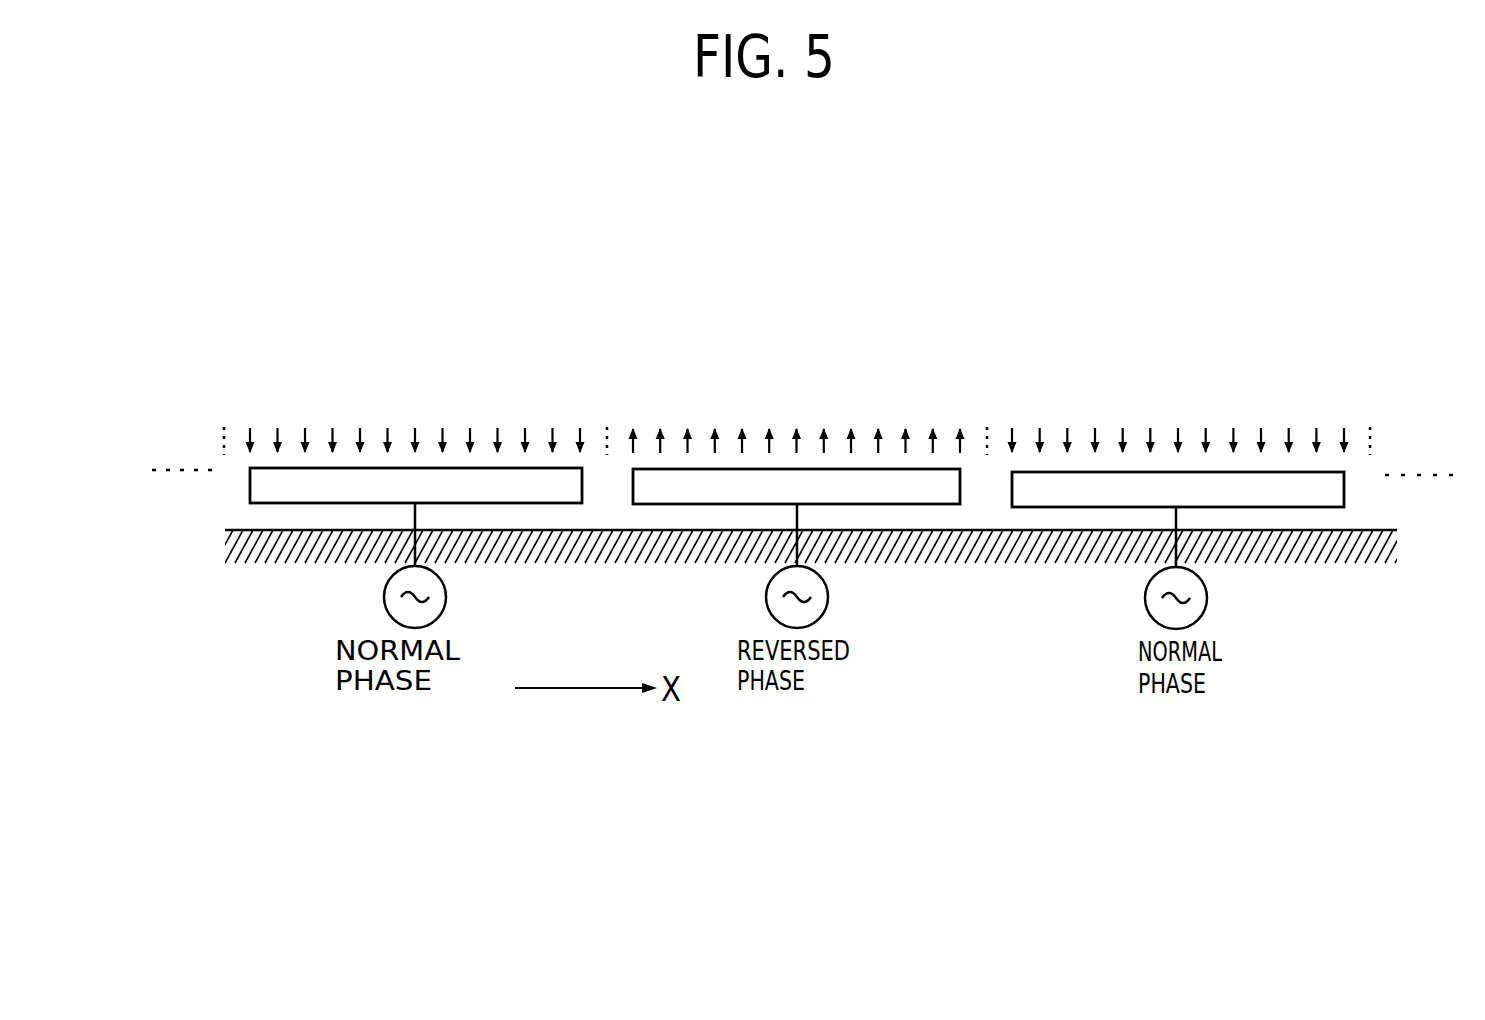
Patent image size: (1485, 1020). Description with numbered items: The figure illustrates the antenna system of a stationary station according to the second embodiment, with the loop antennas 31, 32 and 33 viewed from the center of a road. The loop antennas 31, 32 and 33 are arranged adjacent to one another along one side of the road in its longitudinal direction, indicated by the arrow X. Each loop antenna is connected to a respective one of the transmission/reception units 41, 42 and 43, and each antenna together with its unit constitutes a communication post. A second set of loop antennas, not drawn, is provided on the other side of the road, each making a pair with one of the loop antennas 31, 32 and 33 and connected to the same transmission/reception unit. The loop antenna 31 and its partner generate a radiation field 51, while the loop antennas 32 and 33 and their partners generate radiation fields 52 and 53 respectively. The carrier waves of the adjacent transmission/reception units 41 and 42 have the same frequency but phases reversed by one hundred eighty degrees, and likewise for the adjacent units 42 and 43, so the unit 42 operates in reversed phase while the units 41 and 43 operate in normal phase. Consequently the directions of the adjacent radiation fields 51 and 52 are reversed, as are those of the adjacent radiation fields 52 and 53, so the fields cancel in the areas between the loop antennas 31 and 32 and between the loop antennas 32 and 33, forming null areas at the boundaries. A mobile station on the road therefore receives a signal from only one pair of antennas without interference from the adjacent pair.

The loop antenna 31 is at (325, 503).
The loop antenna 32 is at (720, 504).
The loop antenna 33 is at (1105, 506).
The transmission/reception unit 41 is at (446, 597).
The transmission/reception unit 42 is at (826, 606).
The transmission/reception unit 43 is at (1207, 606).
The radiation field 51 is at (471, 445).
The radiation field 52 is at (853, 449).
The radiation field 53 is at (1257, 447).